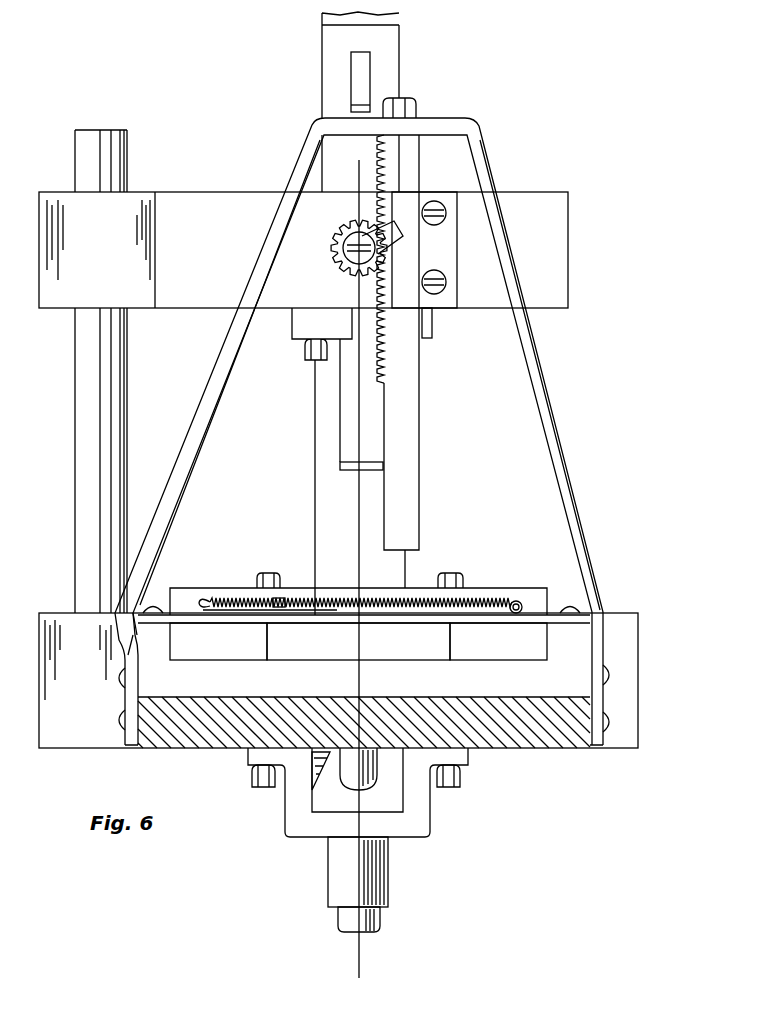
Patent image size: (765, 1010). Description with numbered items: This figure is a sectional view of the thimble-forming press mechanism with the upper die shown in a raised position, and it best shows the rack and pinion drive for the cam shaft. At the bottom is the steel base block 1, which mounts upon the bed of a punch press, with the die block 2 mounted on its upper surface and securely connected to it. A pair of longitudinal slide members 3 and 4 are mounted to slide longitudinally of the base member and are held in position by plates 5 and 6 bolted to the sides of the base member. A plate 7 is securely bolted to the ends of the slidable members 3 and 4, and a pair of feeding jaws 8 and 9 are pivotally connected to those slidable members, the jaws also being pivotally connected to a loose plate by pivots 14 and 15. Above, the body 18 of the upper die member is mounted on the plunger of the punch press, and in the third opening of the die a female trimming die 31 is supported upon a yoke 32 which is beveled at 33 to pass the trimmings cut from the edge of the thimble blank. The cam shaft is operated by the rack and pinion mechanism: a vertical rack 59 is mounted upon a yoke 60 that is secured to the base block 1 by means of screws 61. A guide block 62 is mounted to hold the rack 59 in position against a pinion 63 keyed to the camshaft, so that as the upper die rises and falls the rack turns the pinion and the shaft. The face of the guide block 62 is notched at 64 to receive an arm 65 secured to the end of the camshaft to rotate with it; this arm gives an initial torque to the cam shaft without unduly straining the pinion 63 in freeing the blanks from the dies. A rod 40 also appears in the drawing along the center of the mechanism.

The base block 1 is at (630, 705).
The die block 2 is at (400, 643).
The longitudinal slide member 3 is at (218, 641).
The longitudinal slide member 4 is at (498, 641).
The plate 5 is at (158, 612).
The plate 6 is at (553, 613).
The plate 7 is at (193, 590).
The feeding jaw 8 is at (225, 615).
The feeding jaw 9 is at (481, 615).
The pivot 14 is at (268, 573).
The pivot 15 is at (450, 573).
The body of upper die member 18 is at (568, 265).
The female trimming die 31 is at (345, 770).
The yoke 32 is at (428, 812).
The bevel 33 is at (367, 777).
The rod 40 is at (345, 385).
The vertical rack 59 is at (419, 393).
The yoke 60 is at (487, 140).
The screws 61 is at (118, 680).
The guide block 62 is at (457, 263).
The pinion 63 is at (335, 252).
The notch 64 is at (397, 237).
The arm 65 is at (362, 234).